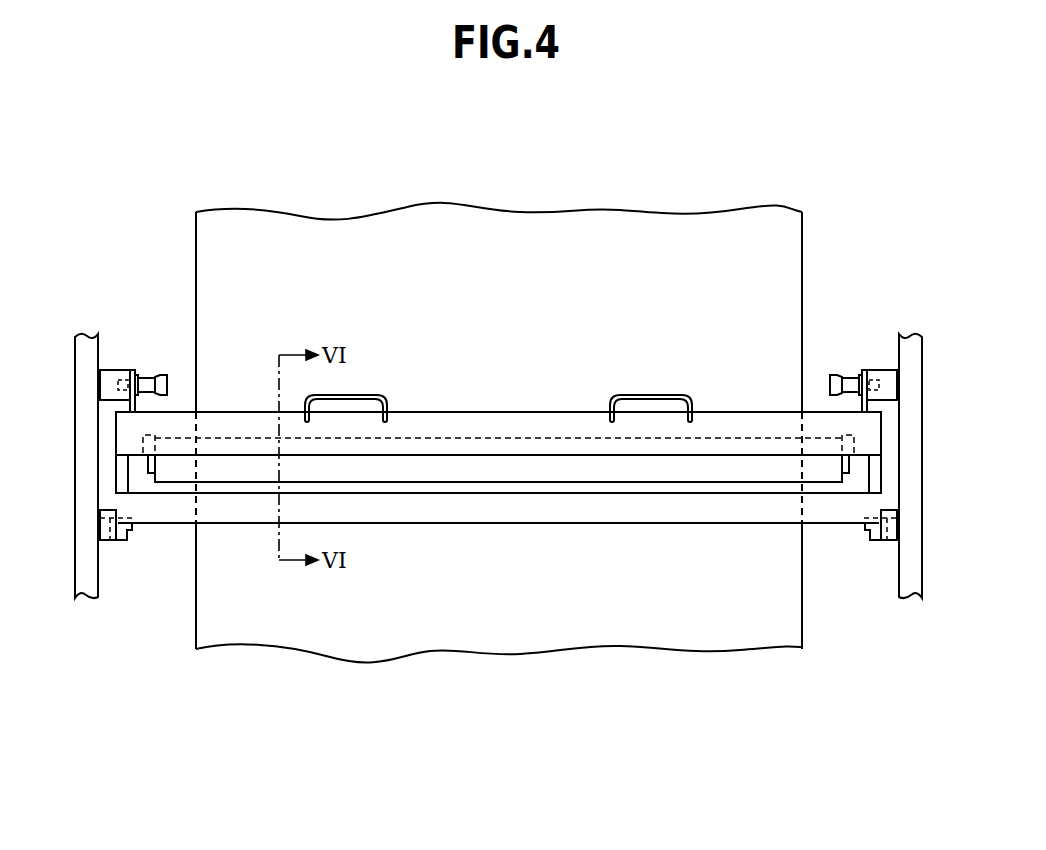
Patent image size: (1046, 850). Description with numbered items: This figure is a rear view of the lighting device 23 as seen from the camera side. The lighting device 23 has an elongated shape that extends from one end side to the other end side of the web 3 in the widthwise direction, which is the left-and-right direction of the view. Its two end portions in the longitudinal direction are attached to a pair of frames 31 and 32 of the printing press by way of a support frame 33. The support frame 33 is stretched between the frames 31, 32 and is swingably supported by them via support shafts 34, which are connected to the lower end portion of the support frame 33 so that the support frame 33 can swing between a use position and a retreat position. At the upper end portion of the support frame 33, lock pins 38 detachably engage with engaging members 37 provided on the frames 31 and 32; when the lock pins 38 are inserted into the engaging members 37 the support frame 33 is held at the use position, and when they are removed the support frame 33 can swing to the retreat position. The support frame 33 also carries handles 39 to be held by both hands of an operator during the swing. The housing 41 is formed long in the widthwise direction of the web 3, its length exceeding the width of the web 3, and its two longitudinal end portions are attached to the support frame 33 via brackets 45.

The web 3 is at (291, 214).
The lighting device 23 is at (405, 540).
The frame 31 is at (88, 334).
The frame 32 is at (908, 334).
The support frame 33 is at (183, 400).
The support shaft 34 is at (110, 540).
The engaging member 37 is at (112, 370).
The lock pin 38 is at (123, 378).
The handle 39 is at (388, 403).
The housing 41 is at (487, 483).
The bracket 45 is at (150, 470).